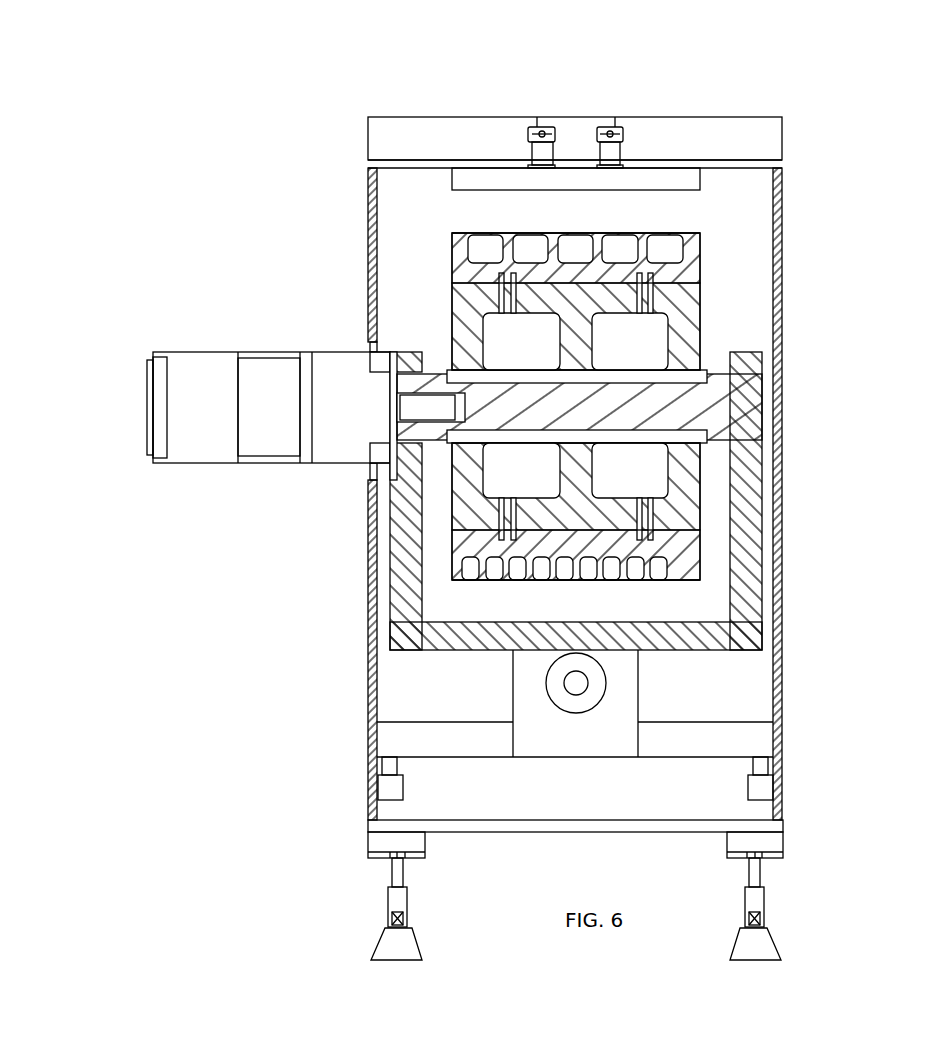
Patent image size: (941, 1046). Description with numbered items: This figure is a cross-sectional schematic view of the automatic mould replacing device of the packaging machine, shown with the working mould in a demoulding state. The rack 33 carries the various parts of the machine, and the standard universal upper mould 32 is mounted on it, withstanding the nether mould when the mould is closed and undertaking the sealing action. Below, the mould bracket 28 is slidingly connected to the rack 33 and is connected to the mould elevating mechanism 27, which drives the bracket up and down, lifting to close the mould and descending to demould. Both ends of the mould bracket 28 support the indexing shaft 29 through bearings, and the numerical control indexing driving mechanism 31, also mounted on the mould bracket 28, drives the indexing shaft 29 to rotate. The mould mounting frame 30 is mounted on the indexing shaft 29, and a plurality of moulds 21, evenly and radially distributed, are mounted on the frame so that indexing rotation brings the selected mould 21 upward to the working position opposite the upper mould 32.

The mould 21 is at (525, 250).
The mould elevating mechanism 27 is at (550, 698).
The mould bracket 28 is at (400, 598).
The indexing shaft 29 is at (543, 410).
The mould mounting frame 30 is at (480, 307).
The numerical control indexing driving mechanism 31 is at (248, 412).
The upper mould 32 is at (482, 178).
The rack 33 is at (370, 208).